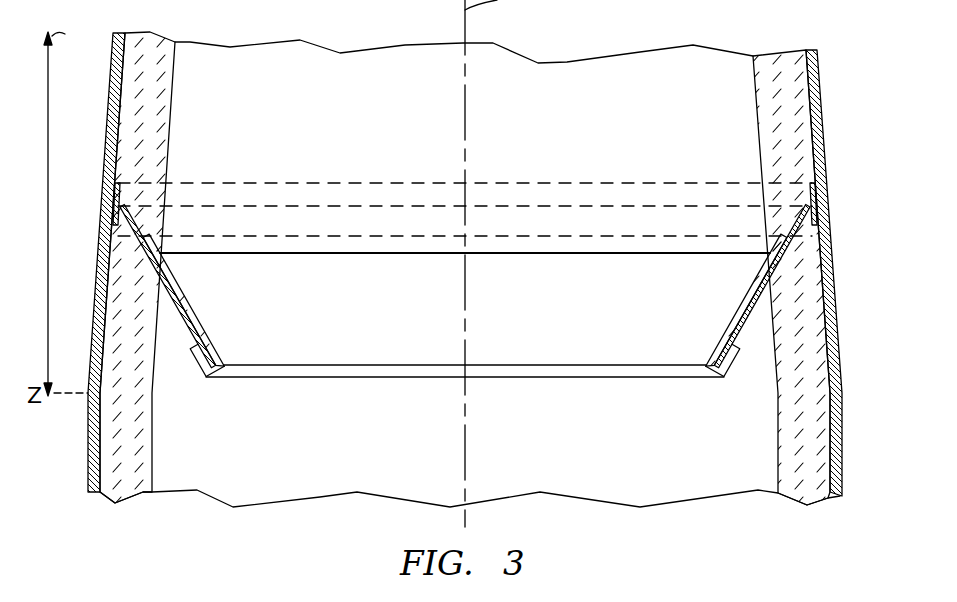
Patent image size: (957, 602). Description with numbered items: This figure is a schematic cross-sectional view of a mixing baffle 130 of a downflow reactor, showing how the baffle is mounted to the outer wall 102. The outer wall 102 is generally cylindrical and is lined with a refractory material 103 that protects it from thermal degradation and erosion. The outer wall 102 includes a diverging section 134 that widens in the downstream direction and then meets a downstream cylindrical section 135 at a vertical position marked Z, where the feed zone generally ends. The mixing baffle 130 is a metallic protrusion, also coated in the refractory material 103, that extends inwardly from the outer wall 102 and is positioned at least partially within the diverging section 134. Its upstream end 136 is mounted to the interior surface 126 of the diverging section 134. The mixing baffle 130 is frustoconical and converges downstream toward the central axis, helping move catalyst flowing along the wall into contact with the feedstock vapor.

The outer wall 102 is at (826, 99).
The refractory material 103 is at (199, 320).
The interior surface 126 is at (118, 153).
The mixing baffle 130 is at (758, 313).
The diverging section 134 is at (107, 125).
The downstream cylindrical section 135 is at (88, 445).
The upstream end 136 is at (602, 206).